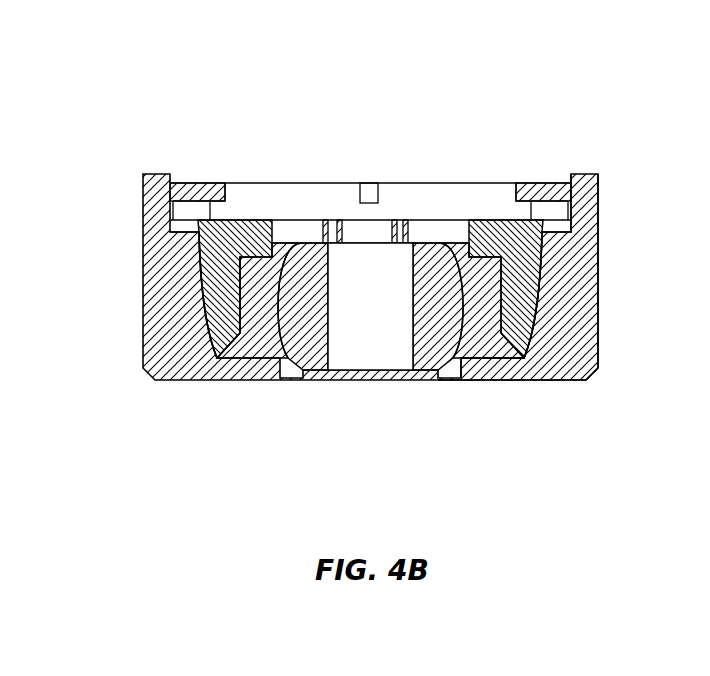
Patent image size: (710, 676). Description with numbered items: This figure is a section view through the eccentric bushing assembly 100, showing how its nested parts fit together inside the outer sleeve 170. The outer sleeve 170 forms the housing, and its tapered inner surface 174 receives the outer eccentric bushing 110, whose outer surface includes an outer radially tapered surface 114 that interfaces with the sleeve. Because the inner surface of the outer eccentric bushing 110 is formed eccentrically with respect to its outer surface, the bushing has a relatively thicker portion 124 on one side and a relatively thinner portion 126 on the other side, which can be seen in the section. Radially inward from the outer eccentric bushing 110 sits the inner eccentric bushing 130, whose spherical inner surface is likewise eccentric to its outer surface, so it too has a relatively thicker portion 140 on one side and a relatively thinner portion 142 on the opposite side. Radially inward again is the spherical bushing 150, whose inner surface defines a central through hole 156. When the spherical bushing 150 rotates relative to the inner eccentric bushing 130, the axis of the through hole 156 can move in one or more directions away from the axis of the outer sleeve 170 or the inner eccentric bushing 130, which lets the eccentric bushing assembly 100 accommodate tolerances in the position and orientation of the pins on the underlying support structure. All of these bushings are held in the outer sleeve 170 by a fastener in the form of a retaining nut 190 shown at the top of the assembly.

The eccentric bushing assembly 100 is at (406, 108).
The outer eccentric bushing 110 is at (211, 220).
The outer radially tapered surface 114 is at (545, 304).
The relatively thicker portion 124 is at (518, 379).
The relatively thinner portion 126 is at (222, 332).
The inner eccentric bushing 130 is at (261, 332).
The relatively thicker portion 140 is at (275, 262).
The relatively thinner portion 142 is at (486, 346).
The spherical bushing 150 is at (432, 360).
The through hole 156 is at (343, 348).
The outer sleeve 170 is at (181, 378).
The tapered inner surface 174 is at (196, 265).
The retaining nut 190 is at (541, 195).